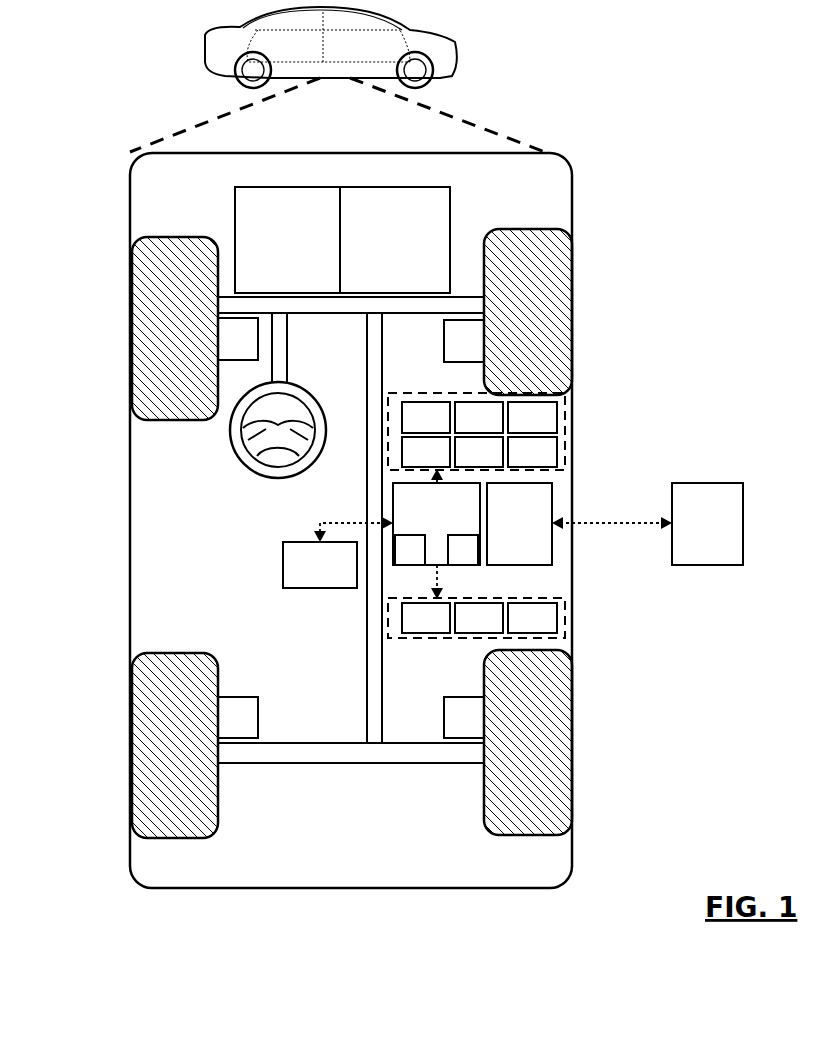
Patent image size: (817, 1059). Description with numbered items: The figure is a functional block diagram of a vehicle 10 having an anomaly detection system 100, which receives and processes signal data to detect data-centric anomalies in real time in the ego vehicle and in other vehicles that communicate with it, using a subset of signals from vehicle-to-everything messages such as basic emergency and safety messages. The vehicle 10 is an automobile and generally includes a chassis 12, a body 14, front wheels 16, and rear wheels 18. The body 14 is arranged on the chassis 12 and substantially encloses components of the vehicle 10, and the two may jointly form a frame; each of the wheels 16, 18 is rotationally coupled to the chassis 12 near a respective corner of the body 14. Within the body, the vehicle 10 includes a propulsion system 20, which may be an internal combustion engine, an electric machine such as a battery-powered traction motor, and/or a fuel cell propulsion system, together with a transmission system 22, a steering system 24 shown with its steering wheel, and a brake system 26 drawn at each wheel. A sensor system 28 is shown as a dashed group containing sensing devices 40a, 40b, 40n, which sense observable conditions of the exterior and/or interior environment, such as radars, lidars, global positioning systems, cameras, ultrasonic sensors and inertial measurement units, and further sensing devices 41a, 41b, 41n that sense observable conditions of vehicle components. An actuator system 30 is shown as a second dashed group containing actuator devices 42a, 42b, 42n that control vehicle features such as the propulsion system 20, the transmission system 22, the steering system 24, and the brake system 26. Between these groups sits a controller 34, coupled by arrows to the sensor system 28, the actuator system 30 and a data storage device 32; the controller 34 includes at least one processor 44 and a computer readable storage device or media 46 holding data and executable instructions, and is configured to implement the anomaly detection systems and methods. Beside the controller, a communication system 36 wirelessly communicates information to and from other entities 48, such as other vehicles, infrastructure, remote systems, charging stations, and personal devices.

The anomaly detection system 100 is at (596, 168).
The vehicle 10 is at (206, 58).
The chassis 12 is at (367, 685).
The body 14 is at (130, 508).
The front wheels 16 is at (511, 229).
The rear wheels 18 is at (190, 838).
The propulsion system 20 is at (287, 240).
The transmission system 22 is at (395, 240).
The steering system 24 is at (315, 342).
The brake system 26 is at (351, 528).
The sensor system 28 is at (414, 394).
The actuator system 30 is at (398, 640).
The data storage device 32 is at (320, 565).
The controller 34 is at (436, 524).
The communication system 36 is at (519, 524).
The sensing device 40a is at (426, 417).
The sensing device 40b is at (479, 417).
The sensing device 40n is at (532, 417).
The sensing device 41a is at (426, 452).
The sensing device 41b is at (479, 452).
The sensing device 41n is at (532, 452).
The actuator device 42a is at (426, 618).
The actuator device 42b is at (479, 618).
The actuator device 42n is at (532, 618).
The processor 44 is at (410, 550).
The computer readable storage device or media 46 is at (463, 550).
The other entities 48 is at (707, 524).